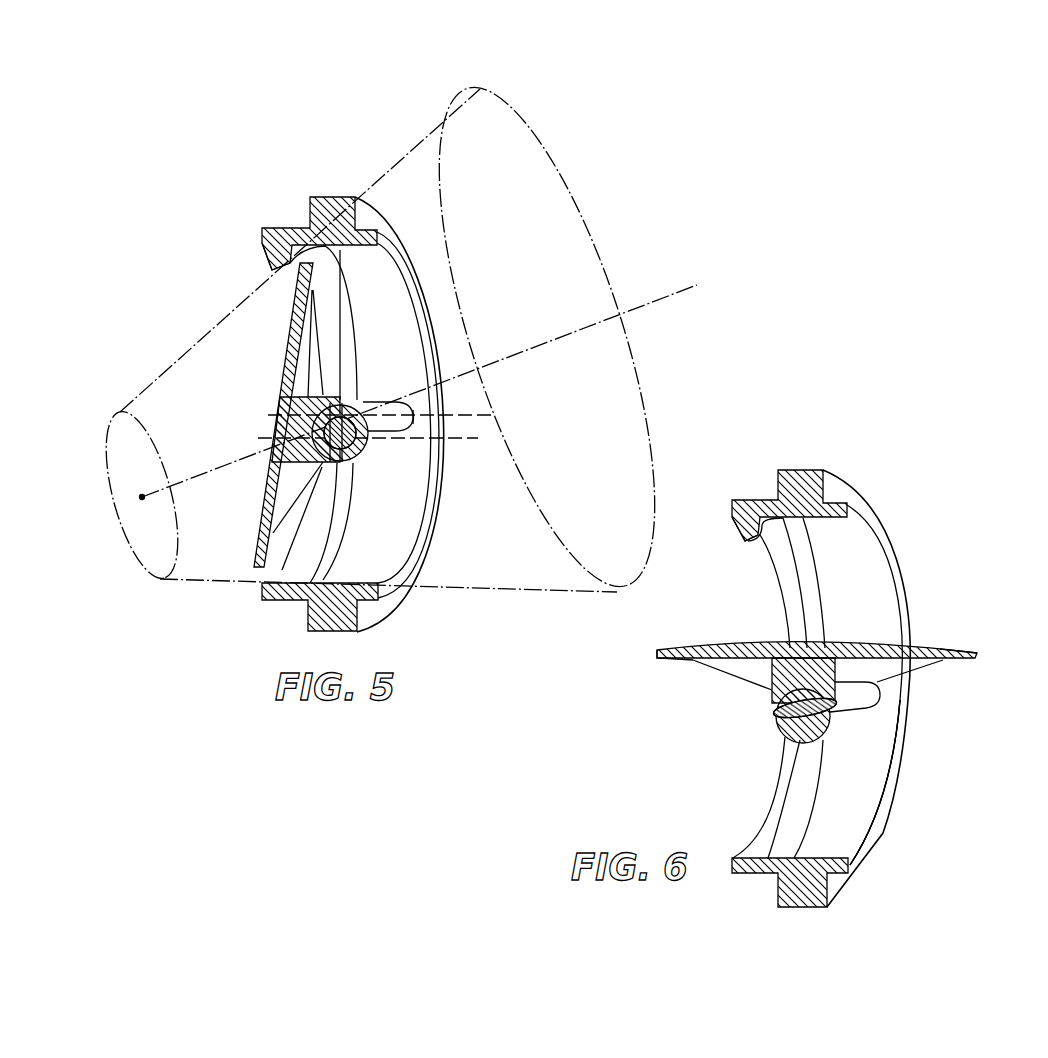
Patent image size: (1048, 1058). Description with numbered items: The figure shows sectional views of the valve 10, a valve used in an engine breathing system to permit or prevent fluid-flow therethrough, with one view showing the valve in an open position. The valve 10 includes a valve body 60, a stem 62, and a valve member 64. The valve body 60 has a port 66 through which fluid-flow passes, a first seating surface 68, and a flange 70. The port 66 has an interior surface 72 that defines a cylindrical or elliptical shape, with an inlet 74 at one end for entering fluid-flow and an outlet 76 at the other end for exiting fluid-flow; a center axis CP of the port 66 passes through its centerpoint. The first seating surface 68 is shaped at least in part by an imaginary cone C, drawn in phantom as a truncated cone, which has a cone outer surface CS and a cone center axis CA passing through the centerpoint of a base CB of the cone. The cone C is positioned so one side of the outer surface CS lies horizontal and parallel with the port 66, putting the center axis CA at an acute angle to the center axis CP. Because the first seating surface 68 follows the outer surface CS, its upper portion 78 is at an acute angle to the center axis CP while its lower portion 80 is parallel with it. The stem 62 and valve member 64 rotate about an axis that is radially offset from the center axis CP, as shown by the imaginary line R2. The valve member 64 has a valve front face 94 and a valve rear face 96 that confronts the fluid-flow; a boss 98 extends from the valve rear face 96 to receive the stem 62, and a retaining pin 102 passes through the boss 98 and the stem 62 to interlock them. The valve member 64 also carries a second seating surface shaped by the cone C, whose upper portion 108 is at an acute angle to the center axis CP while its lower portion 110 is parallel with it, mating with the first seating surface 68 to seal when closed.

In FIG. 5, the valve 10 is at (262, 180).
In FIG. 6, the valve 10 is at (920, 512).
In FIG. 5, the valve body 60 is at (317, 196).
In FIG. 6, the valve body 60 is at (790, 470).
In FIG. 5, the stem 62 is at (362, 400).
In FIG. 6, the stem 62 is at (848, 715).
In FIG. 5, the valve member 64 is at (335, 329).
In FIG. 6, the valve member 64 is at (928, 645).
In FIG. 6, the port 66 is at (853, 812).
In FIG. 5, the first seating surface 68 is at (307, 548).
In FIG. 6, the first seating surface 68 is at (795, 600).
In FIG. 6, the flange 70 is at (808, 478).
In FIG. 6, the interior surface 72 is at (853, 786).
In FIG. 6, the inlet 74 is at (877, 833).
In FIG. 6, the outlet 76 is at (767, 813).
In FIG. 5, the upper portion 78 is at (285, 272).
In FIG. 6, the upper portion 78 is at (760, 541).
In FIG. 5, the lower portion 80 is at (290, 573).
In FIG. 6, the lower portion 80 is at (753, 845).
In FIG. 6, the valve front face 94 is at (850, 645).
In FIG. 6, the valve rear face 96 is at (727, 668).
In FIG. 6, the boss 98 is at (782, 730).
In FIG. 6, the retaining pin 102 is at (775, 710).
In FIG. 6, the upper portion 108 is at (965, 656).
In FIG. 6, the lower portion 110 is at (660, 655).
In FIG. 5, the cone outer surface CS is at (383, 170).
In FIG. 5, the cone center axis CA is at (562, 337).
In FIG. 5, the base CB is at (142, 500).
In FIG. 5, the center axis CP is at (462, 418).
In FIG. 5, the cone C is at (470, 594).
In FIG. 5, the imaginary line R2 is at (410, 440).